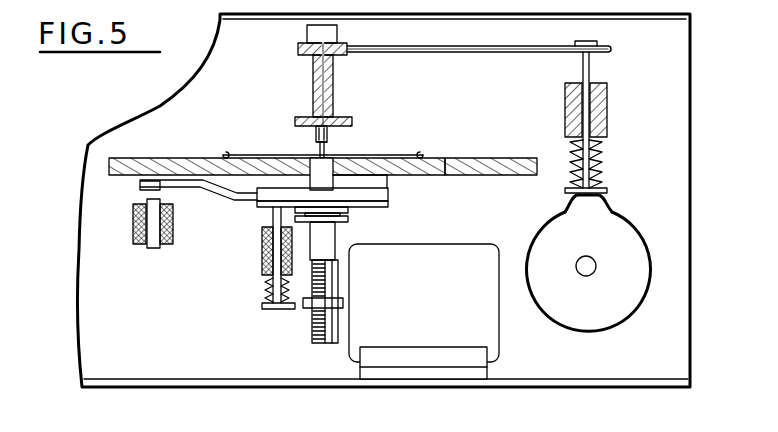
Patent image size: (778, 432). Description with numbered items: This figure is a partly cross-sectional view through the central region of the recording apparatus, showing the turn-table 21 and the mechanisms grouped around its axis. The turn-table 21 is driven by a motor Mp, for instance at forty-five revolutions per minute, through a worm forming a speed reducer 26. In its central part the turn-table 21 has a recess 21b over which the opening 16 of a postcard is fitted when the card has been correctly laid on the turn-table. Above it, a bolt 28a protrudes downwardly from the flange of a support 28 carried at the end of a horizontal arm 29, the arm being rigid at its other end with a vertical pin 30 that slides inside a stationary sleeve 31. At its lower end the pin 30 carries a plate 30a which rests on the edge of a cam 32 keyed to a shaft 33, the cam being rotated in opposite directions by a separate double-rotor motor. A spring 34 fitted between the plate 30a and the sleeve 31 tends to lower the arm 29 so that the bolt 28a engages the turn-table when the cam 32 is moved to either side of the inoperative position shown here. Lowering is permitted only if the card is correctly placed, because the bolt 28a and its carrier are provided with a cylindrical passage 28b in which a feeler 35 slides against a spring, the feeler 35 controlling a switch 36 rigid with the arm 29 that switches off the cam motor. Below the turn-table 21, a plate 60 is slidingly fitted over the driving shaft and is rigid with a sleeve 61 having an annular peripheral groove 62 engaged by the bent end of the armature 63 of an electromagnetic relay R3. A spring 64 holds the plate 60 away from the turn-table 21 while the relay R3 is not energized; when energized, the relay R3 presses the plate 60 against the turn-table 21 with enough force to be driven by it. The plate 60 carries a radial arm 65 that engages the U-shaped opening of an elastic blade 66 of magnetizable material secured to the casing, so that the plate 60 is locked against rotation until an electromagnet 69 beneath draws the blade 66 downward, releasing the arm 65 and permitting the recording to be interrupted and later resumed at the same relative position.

The opening 16 is at (328, 153).
The turn-table 21 is at (485, 171).
The recess 21b is at (362, 191).
The speed reducer 26 is at (333, 283).
The support 28 is at (343, 118).
The bolt 28a is at (316, 134).
The cylindrical passage 28b is at (335, 72).
The horizontal arm 29 is at (447, 52).
The vertical pin 30 is at (592, 60).
The plate 30a is at (607, 191).
The stationary sleeve 31 is at (599, 121).
The cam 32 is at (630, 280).
The shaft 33 is at (580, 272).
The spring 34 is at (601, 174).
The feeler 35 is at (318, 150).
The switch 36 is at (338, 31).
The plate 60 is at (265, 204).
The sleeve 61 is at (338, 220).
The annular peripheral groove 62 is at (347, 214).
The armature 63 is at (270, 275).
The spring 64 is at (287, 309).
The radial arm 65 is at (214, 191).
The elastic blade 66 is at (140, 188).
The electromagnet 69 is at (135, 228).
The electromagnetic relay R3 is at (262, 243).
The motor Mp is at (424, 311).